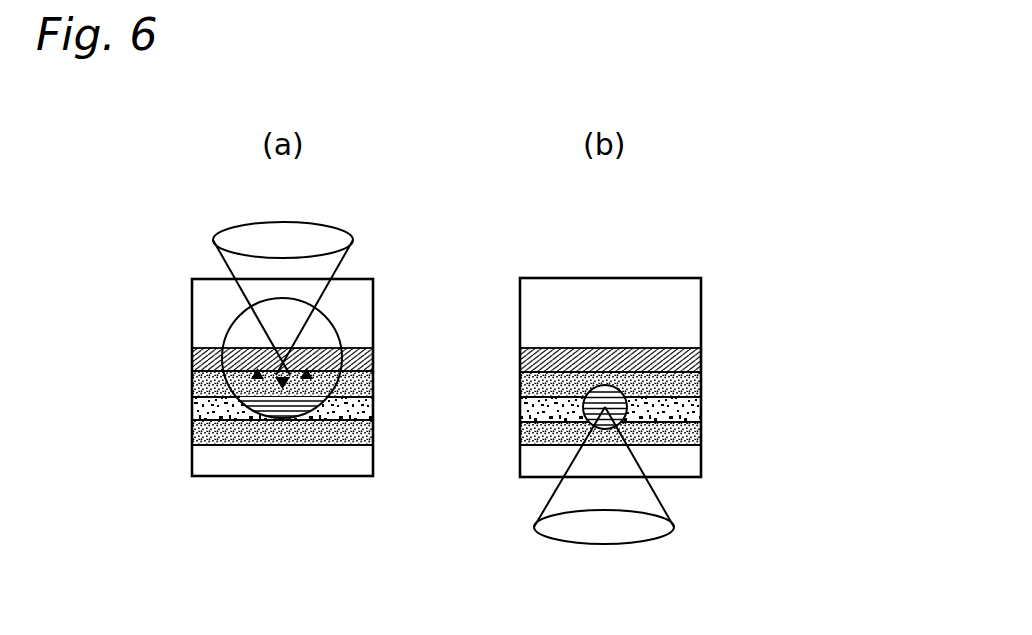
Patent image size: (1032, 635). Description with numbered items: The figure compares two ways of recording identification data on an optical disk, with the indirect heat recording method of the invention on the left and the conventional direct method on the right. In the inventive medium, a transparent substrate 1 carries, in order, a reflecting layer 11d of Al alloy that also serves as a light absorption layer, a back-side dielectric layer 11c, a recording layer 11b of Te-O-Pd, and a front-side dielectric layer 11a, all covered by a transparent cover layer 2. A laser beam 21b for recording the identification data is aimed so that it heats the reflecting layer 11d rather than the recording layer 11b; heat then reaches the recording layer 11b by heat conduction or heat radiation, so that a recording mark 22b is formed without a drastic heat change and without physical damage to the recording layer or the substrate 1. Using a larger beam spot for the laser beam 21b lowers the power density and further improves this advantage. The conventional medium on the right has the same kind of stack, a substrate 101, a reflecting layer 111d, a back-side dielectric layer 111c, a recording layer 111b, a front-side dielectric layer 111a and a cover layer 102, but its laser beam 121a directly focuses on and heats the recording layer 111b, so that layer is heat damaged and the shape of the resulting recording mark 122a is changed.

The substrate 1 is at (200, 300).
The cover layer 2 is at (200, 462).
The front-side dielectric layer 11a is at (192, 433).
The recording layer 11b is at (192, 410).
The back-side dielectric layer 11c is at (192, 384).
The reflecting layer 11d is at (192, 356).
The laser beam 21b is at (322, 237).
The recording mark 22b is at (283, 405).
The substrate 101 is at (685, 307).
The cover layer 102 is at (688, 465).
The front-side dielectric layer 111a is at (700, 445).
The recording layer 111b is at (700, 407).
The back-side dielectric layer 111c is at (700, 383).
The reflecting layer 111d is at (700, 357).
The laser beam 121a is at (637, 492).
The recording mark 122a is at (583, 422).